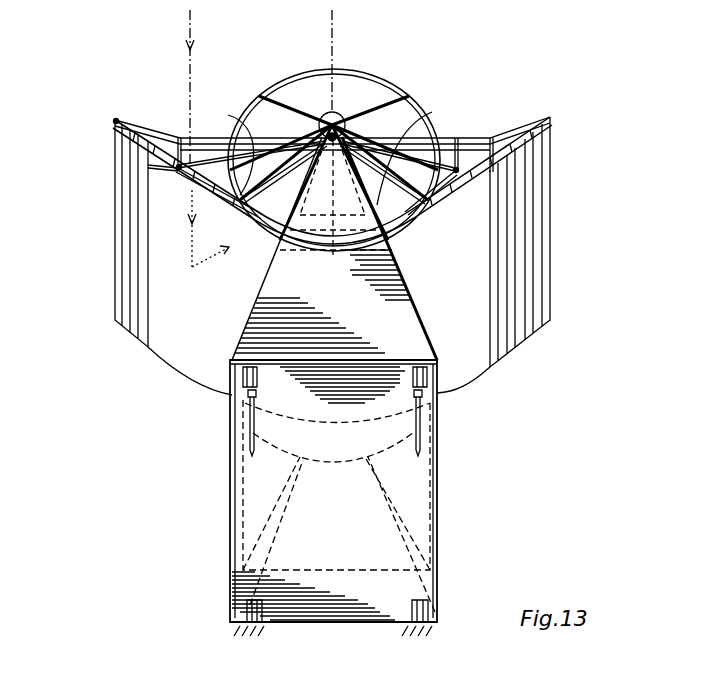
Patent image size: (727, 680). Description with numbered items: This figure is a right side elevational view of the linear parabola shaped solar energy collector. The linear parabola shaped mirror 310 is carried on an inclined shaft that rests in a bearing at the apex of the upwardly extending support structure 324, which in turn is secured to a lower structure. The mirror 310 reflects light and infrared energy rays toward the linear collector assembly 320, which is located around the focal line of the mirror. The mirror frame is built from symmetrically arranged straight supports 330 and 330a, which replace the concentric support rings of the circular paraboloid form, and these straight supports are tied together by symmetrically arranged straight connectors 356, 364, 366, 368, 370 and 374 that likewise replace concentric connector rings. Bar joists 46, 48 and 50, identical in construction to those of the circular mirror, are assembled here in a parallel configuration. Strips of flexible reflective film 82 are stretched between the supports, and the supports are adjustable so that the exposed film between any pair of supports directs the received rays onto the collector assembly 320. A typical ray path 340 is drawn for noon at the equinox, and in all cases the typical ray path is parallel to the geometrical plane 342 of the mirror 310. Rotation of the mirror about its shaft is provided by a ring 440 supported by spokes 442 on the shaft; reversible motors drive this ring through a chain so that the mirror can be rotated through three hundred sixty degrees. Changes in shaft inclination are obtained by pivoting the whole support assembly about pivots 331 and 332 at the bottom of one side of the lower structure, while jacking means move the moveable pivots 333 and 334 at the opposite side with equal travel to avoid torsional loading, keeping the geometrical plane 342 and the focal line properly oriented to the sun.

The linear parabola shaped mirror 310 is at (556, 189).
The linear collector assembly 320 is at (344, 109).
The support structure 324 is at (416, 304).
The straight support 330 is at (200, 192).
The straight support 330a is at (114, 124).
The pivot 331 is at (240, 614).
The pivot 332 is at (432, 614).
The moveable pivot 333 is at (243, 372).
The moveable pivot 334 is at (427, 372).
The typical ray path 340 is at (191, 63).
The geometrical plane 342 is at (334, 33).
The straight connector 356 is at (322, 233).
The straight connector 364 is at (242, 214).
The straight connector 366 is at (229, 115).
The straight connector 368 is at (178, 170).
The straight connector 370 is at (180, 162).
The straight connector 374 is at (114, 120).
The ring 440 is at (393, 107).
The spokes 442 is at (388, 114).
The bar joist 46 is at (432, 112).
The bar joist 48 is at (456, 168).
The bar joist 50 is at (508, 128).
The flexible reflective film 82 is at (202, 331).